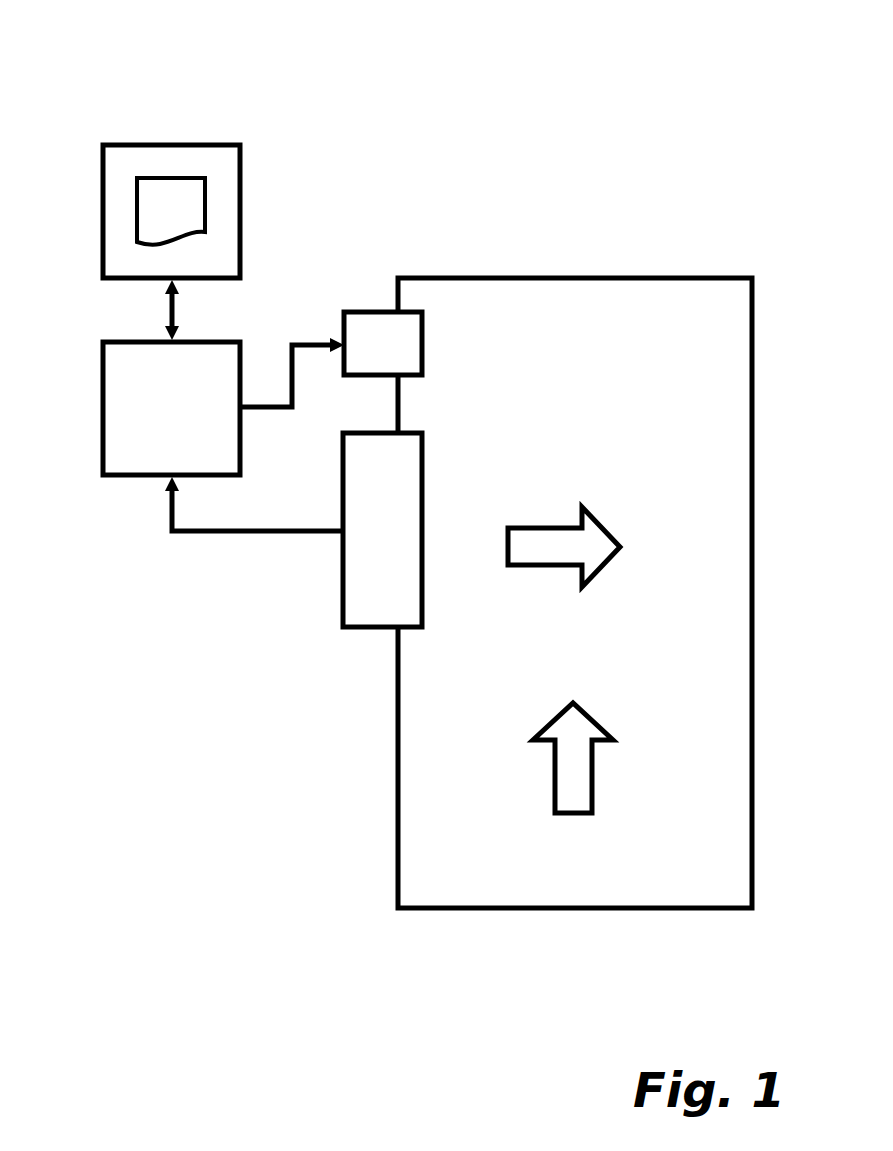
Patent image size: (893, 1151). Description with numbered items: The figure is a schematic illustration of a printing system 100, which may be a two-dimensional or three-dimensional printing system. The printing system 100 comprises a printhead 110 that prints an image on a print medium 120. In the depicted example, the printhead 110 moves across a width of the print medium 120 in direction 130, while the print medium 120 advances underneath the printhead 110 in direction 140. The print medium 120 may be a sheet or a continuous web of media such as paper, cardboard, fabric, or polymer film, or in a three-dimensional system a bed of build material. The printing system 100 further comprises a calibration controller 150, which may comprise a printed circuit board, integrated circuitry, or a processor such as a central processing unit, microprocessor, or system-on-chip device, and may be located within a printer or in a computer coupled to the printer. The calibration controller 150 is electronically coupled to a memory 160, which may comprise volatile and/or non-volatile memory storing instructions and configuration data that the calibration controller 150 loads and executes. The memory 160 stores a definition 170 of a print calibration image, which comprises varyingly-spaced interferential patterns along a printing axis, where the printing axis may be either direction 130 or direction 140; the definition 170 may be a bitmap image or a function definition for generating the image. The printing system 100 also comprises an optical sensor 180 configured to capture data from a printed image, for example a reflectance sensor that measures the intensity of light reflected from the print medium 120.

The printing system 100 is at (132, 49).
The printhead 110 is at (342, 593).
The print medium 120 is at (423, 912).
The direction 130 is at (542, 527).
The direction 140 is at (553, 797).
The calibration controller 150 is at (103, 450).
The memory 160 is at (103, 248).
The definition of a print calibration image 170 is at (172, 205).
The optical sensor 180 is at (378, 310).